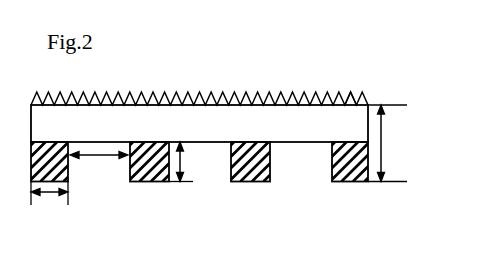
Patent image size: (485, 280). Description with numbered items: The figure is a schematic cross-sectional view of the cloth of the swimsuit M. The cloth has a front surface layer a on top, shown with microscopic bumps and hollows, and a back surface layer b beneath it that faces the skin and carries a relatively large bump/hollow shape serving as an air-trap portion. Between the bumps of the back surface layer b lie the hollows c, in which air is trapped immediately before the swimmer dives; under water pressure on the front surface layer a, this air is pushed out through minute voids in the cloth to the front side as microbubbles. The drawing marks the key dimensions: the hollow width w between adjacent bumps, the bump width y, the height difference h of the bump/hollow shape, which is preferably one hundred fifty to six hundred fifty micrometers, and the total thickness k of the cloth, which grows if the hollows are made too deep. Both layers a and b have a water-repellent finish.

The swimsuit M is at (213, 103).
The front surface layer a is at (353, 85).
The back surface layer b is at (212, 192).
The hollows (air-trap portion) c is at (292, 152).
The hollow width w is at (99, 172).
The bump width y is at (49, 205).
The height difference of bump/hollow shape (bump height) h is at (184, 162).
The thickness k is at (388, 143).